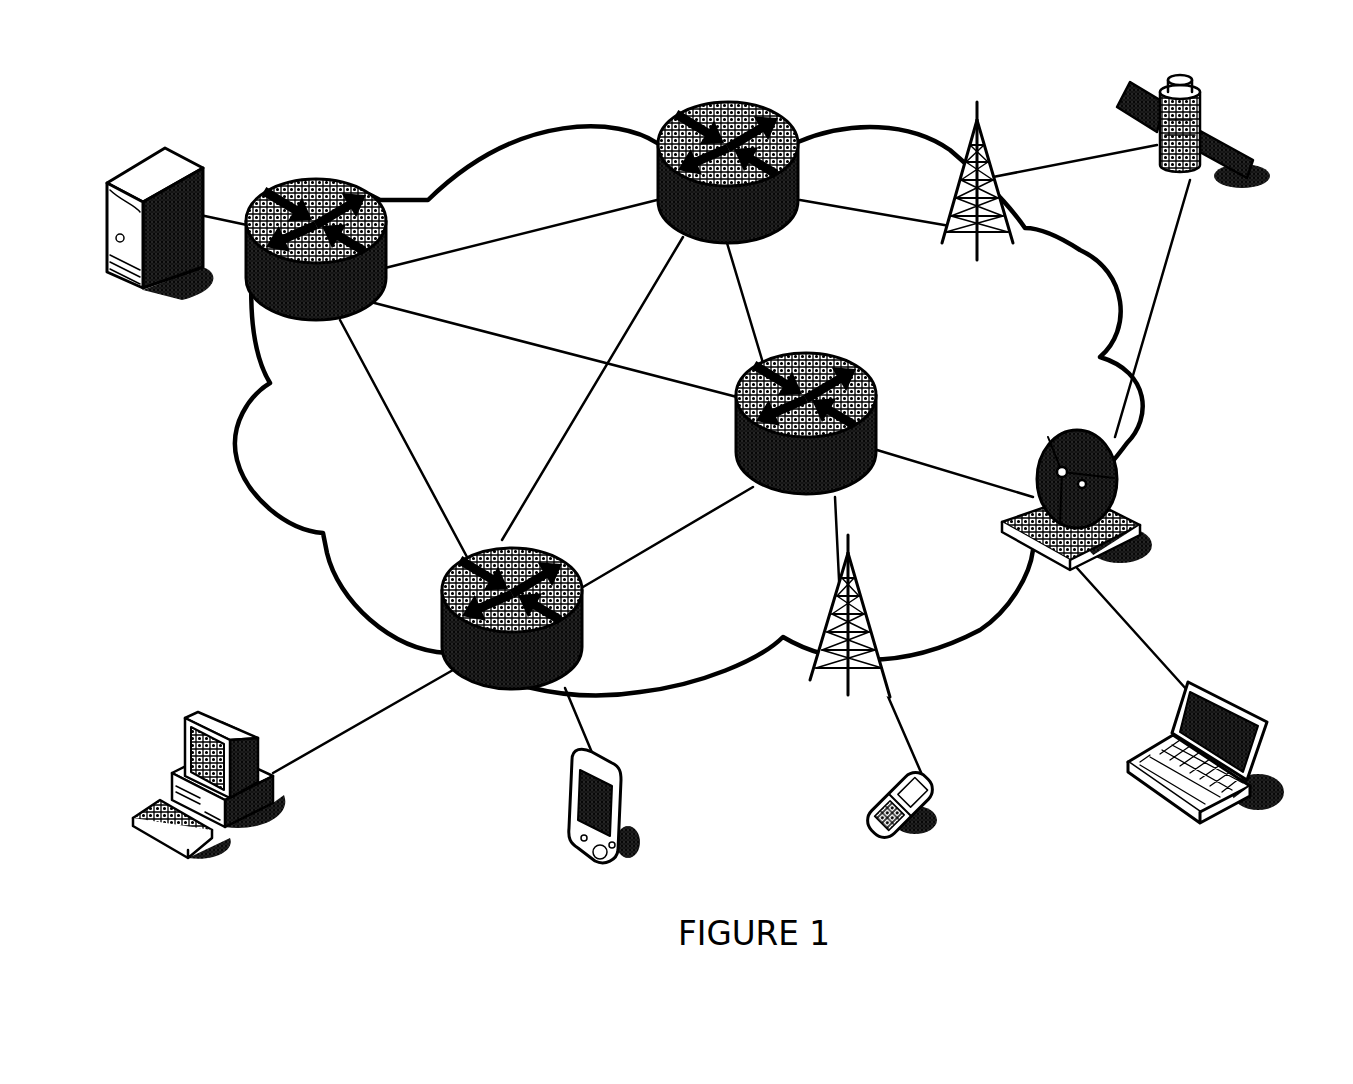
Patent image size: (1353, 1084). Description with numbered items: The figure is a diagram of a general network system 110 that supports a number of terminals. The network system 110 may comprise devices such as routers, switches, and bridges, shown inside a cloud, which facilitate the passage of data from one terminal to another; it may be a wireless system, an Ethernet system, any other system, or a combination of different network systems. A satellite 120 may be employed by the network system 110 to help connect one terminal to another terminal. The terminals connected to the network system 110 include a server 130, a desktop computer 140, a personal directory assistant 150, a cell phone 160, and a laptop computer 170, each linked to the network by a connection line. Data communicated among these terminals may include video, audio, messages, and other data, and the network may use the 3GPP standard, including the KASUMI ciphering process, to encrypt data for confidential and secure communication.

The network system 110 is at (502, 135).
The satellite 120 is at (1202, 172).
The server 130 is at (188, 157).
The desktop computer 140 is at (225, 717).
The personal directory assistant (PDA) 150 is at (627, 827).
The cell phone 160 is at (918, 825).
The laptop computer 170 is at (1218, 697).